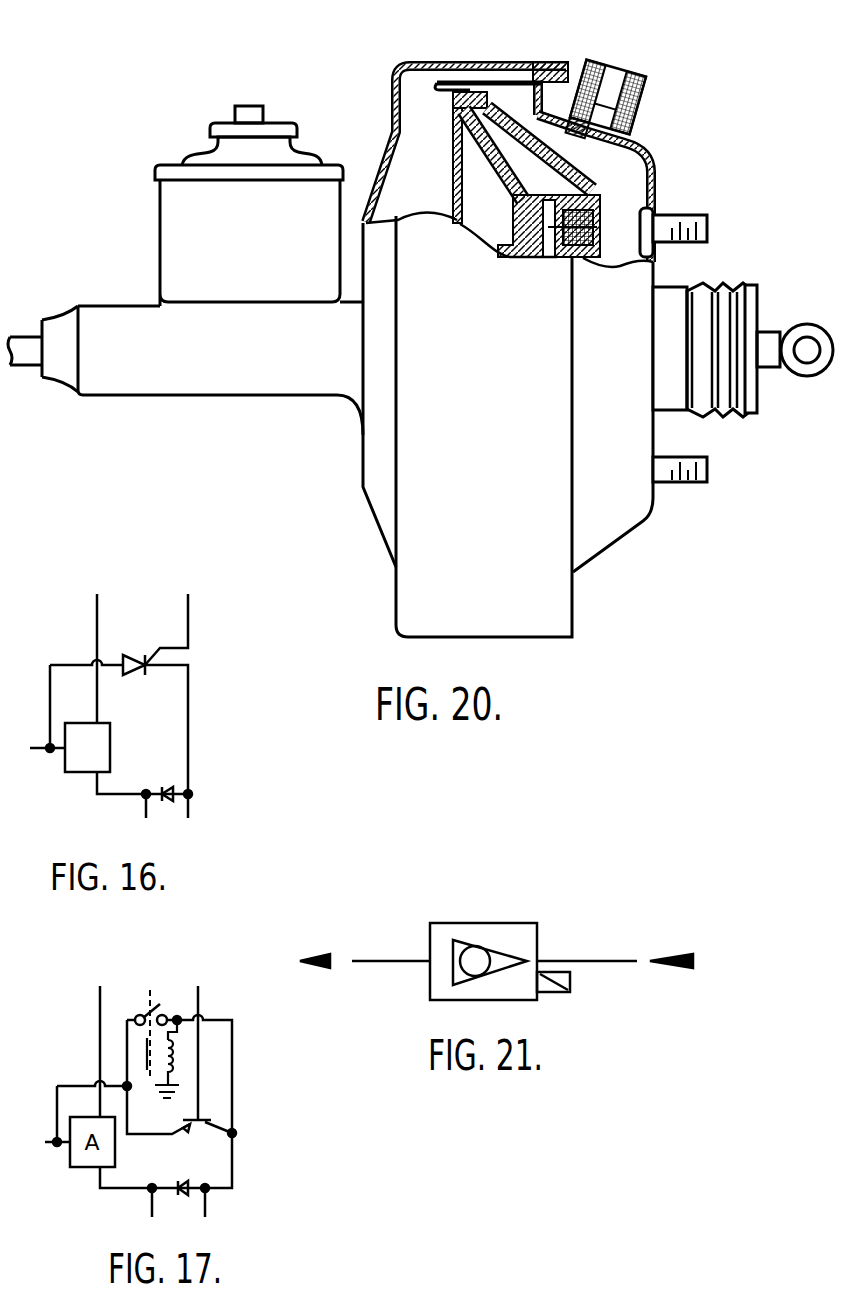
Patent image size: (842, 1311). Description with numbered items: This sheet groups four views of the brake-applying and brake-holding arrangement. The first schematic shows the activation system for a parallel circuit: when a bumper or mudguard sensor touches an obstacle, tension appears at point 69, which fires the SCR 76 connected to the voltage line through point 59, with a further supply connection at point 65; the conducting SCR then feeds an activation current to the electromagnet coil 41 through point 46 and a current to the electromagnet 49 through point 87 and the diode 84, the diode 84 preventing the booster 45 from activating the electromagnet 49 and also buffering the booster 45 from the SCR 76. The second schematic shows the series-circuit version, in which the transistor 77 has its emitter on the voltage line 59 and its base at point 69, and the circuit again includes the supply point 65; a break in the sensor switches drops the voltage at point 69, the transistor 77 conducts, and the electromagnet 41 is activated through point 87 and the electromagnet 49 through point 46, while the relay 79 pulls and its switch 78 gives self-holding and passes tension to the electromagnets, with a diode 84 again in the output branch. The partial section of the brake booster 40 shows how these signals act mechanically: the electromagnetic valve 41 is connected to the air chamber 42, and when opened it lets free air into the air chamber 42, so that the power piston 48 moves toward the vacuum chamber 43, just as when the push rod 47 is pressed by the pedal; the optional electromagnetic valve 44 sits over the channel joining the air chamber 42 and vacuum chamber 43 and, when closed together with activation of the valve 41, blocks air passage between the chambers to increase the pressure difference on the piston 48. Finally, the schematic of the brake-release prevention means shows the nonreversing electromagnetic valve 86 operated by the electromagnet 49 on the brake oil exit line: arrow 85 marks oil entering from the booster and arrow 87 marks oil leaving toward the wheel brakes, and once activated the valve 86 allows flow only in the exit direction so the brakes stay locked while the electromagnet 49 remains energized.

In FIG. 20, the booster housing 40 is at (555, 587).
In FIG. 20, the electromagnetic valve 41 is at (665, 102).
In FIG. 20, the air chamber 42 is at (623, 180).
In FIG. 20, the vacuum chamber 43 is at (428, 167).
In FIG. 20, the electromagnetic valve 44 is at (623, 210).
In FIG. 20, the push rod 47 is at (796, 368).
In FIG. 20, the power piston 48 is at (452, 117).
In FIG. 16, the booster 45 is at (80, 772).
In FIG. 16, the point 46 is at (146, 820).
In FIG. 17, the point 46 is at (150, 1215).
In FIG. 16, the voltage line 59 is at (34, 748).
In FIG. 17, the voltage line 59 is at (40, 1142).
In FIG. 16, the supply terminal 65 is at (97, 646).
In FIG. 17, the supply terminal 65 is at (100, 1040).
In FIG. 16, the point 69 is at (172, 617).
In FIG. 17, the point 69 is at (198, 1041).
In FIG. 16, the SCR 76 is at (131, 655).
In FIG. 17, the transistor 77 is at (213, 1128).
In FIG. 17, the switch 78 is at (147, 1012).
In FIG. 17, the relay 79 is at (170, 1058).
In FIG. 16, the diode 84 is at (164, 790).
In FIG. 17, the diode 84 is at (210, 1160).
In FIG. 21, the arrow 85 is at (615, 953).
In FIG. 21, the nonreversing electromagnetic valve 86 is at (503, 923).
In FIG. 16, the arrow 87 is at (188, 820).
In FIG. 17, the arrow 87 is at (205, 1211).
In FIG. 21, the arrow 87 is at (365, 953).
In FIG. 21, the electromagnet 49 is at (552, 993).